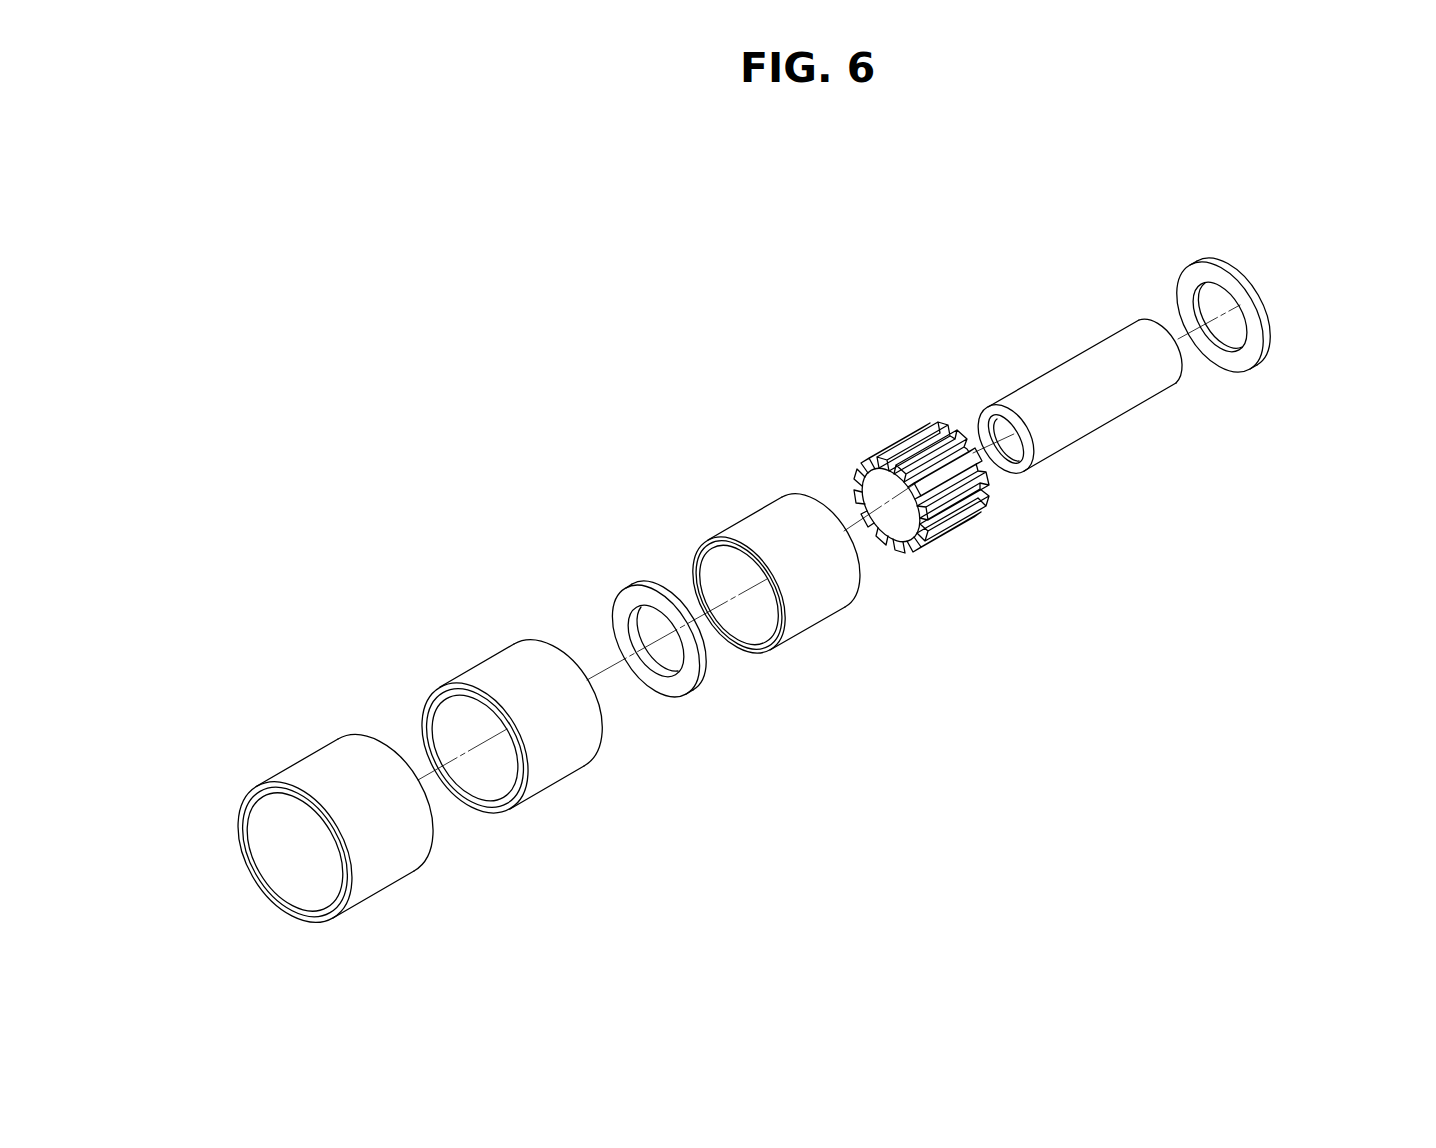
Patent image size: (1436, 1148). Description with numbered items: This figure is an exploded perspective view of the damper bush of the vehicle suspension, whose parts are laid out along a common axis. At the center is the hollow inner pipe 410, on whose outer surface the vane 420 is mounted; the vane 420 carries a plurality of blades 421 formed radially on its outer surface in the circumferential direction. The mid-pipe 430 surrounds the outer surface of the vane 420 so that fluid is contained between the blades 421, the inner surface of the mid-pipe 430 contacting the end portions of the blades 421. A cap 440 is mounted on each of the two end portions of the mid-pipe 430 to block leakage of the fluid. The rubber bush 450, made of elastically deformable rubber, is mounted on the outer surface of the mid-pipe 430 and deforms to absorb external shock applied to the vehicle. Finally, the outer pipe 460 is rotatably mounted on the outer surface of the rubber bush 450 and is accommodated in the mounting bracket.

The inner pipe 410 is at (1095, 418).
The vane 420 is at (931, 488).
The blades 421 is at (903, 443).
The mid-pipe 430 is at (813, 610).
The cap 440 is at (685, 682).
The rubber bush 450 is at (550, 770).
The outer pipe 460 is at (378, 867).